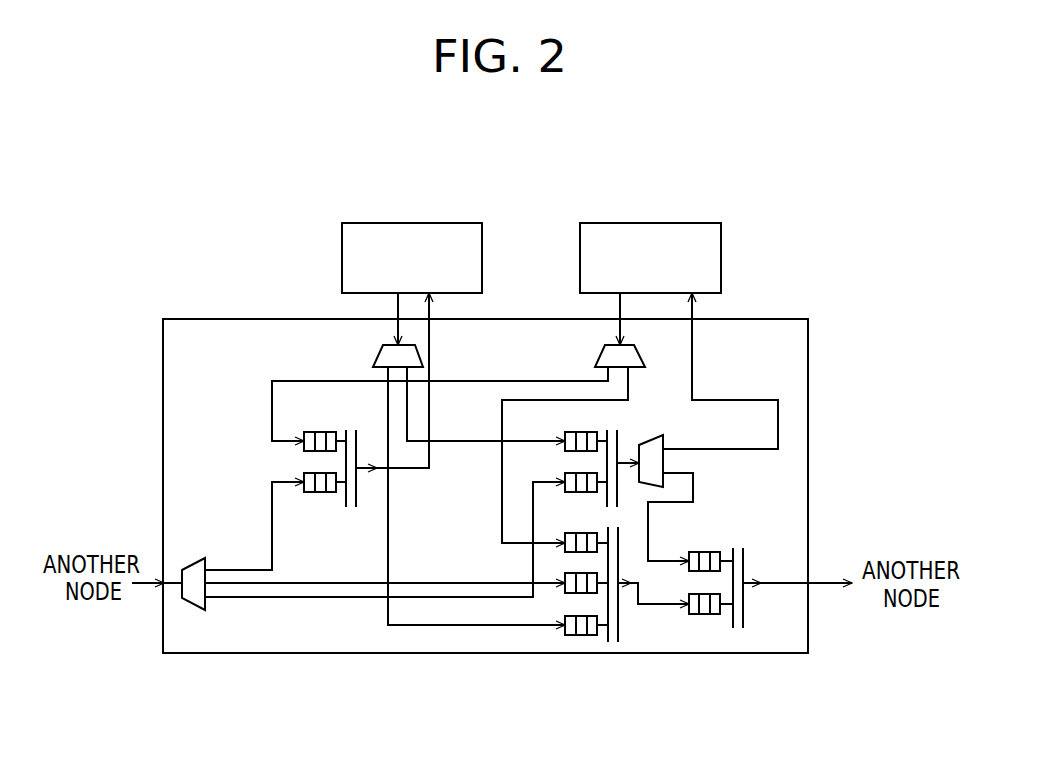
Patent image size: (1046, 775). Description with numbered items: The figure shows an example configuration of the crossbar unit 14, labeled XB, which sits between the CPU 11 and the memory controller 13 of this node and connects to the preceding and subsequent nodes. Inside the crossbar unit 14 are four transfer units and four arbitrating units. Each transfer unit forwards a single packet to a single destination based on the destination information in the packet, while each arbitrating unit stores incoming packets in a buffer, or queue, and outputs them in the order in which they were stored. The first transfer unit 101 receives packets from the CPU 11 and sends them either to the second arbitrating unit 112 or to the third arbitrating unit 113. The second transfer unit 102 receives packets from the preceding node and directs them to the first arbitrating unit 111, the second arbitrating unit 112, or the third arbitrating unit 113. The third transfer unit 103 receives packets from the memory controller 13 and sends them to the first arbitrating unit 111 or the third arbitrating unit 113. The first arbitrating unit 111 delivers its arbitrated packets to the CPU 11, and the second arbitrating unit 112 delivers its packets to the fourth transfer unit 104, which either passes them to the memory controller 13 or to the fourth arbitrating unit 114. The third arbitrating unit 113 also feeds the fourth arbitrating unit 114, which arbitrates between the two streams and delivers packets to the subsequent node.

The CPU 11 is at (483, 254).
The memory controller 13 is at (722, 254).
The crossbar unit 14 is at (192, 318).
The first transfer unit 101 is at (373, 350).
The second transfer unit 102 is at (206, 600).
The third transfer unit 103 is at (595, 350).
The fourth transfer unit 104 is at (664, 462).
The first arbitrating unit 111 is at (355, 508).
The second arbitrating unit 112 is at (618, 432).
The third arbitrating unit 113 is at (618, 643).
The fourth arbitrating unit 114 is at (742, 629).